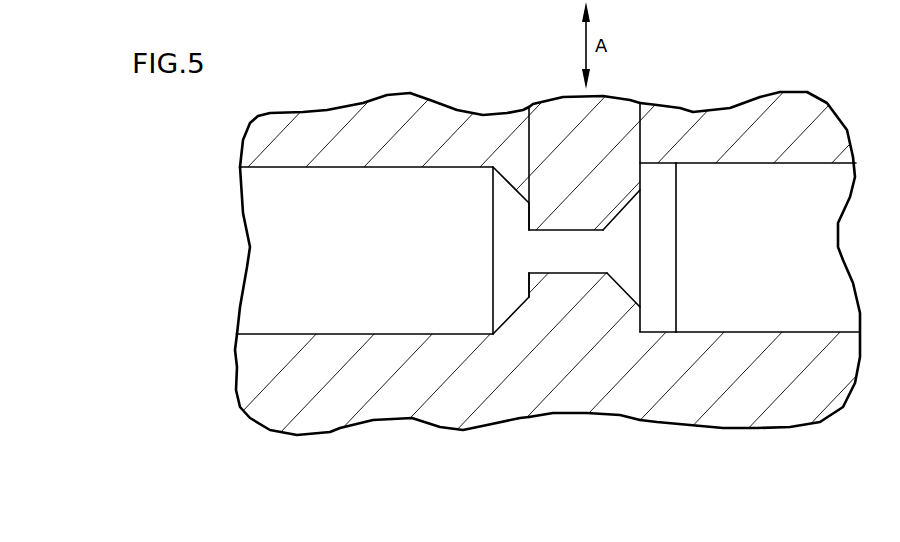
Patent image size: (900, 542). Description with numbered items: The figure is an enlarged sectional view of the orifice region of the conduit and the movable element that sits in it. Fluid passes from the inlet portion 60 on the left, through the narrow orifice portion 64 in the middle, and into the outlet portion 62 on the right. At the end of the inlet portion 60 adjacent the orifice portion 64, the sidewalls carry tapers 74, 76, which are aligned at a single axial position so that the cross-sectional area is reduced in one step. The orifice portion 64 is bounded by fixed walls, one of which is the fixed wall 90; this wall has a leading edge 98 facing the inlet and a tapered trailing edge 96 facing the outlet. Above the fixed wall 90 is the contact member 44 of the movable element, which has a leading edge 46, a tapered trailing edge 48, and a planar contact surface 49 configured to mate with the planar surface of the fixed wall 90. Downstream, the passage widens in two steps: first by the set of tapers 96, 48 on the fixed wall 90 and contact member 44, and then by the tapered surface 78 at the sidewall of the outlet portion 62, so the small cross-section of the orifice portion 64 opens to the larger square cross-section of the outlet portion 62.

The contact member 44 is at (610, 114).
The leading edge 46 is at (530, 203).
The tapered trailing edge 48 is at (623, 208).
The planar contact surface 49 is at (568, 229).
The inlet portion 60 is at (371, 378).
The outlet portion 62 is at (753, 378).
The orifice portion 64 is at (575, 378).
The taper 74 is at (504, 176).
The taper 76 is at (505, 328).
The tapered surface 78 is at (660, 178).
The fixed wall 90 is at (505, 200).
The tapered trailing edge 96 is at (625, 296).
The leading edge 98 is at (530, 285).